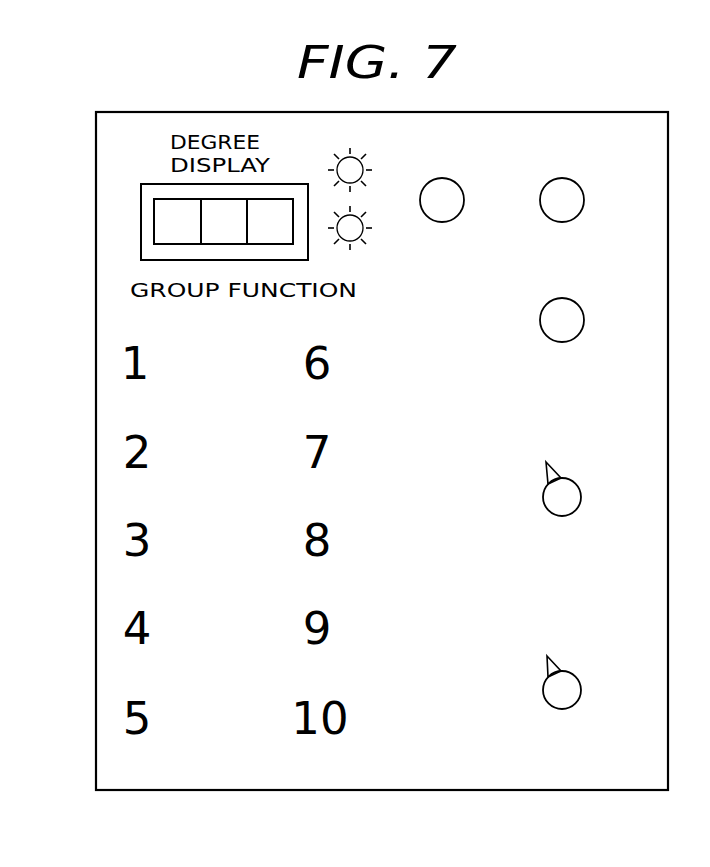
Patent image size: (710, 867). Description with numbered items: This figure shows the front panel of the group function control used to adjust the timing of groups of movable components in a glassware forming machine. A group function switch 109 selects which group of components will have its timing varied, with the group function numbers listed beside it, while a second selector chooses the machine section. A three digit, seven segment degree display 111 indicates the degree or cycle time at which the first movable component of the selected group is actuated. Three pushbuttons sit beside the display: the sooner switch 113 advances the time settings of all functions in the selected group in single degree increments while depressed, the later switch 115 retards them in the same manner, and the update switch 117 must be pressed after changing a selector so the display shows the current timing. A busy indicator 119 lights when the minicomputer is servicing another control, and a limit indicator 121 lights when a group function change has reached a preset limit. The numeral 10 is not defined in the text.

The degree display 111 is at (141, 229).
The busy indicator 119 is at (373, 182).
The limit indicator 121 is at (370, 242).
The update switch 117 is at (465, 200).
The sooner switch 113 is at (584, 200).
The later switch 115 is at (584, 322).
The section selector knob 10 is at (583, 497).
The group function switch 109 is at (543, 690).